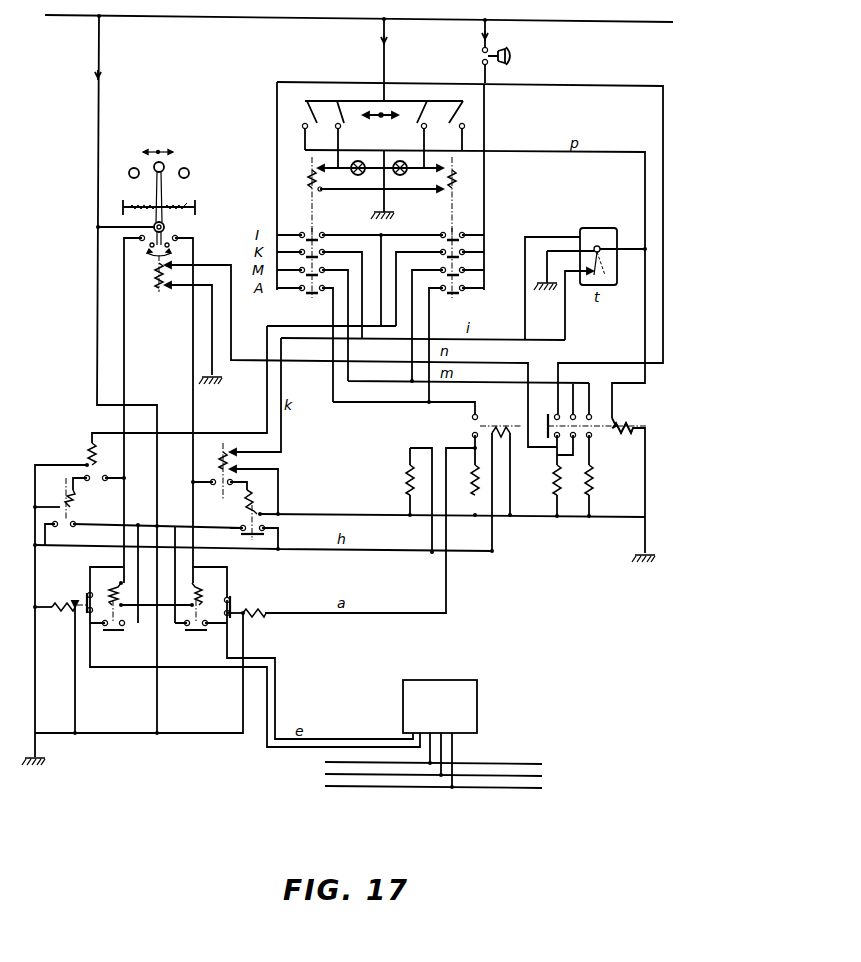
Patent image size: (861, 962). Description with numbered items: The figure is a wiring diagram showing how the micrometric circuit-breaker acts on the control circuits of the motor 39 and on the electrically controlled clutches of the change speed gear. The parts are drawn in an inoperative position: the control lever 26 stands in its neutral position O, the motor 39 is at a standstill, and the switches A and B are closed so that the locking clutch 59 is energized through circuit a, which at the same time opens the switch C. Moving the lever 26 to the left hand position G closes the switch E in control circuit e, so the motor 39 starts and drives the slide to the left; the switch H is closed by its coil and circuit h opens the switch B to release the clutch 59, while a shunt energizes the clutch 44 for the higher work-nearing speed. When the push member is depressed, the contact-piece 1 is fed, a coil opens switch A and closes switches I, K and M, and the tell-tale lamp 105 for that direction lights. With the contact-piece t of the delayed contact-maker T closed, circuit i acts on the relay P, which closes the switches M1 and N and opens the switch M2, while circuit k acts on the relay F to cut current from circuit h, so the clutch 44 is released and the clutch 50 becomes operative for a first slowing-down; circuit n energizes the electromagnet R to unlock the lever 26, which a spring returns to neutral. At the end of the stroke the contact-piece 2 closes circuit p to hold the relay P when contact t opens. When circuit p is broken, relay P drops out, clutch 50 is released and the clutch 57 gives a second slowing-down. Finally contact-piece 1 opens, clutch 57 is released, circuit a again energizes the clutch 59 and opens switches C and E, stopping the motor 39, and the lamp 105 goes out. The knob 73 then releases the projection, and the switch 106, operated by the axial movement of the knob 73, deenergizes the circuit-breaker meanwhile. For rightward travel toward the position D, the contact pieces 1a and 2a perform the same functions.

The control lever 26 is at (163, 203).
The neutral position O is at (158, 149).
The left hand position G is at (144, 192).
The right hand position D is at (172, 192).
The electromagnet R is at (147, 273).
The contact-piece 1 is at (333, 132).
The contact-piece 2 is at (298, 132).
The contact-piece 1a is at (432, 132).
The contact-piece 2a is at (469, 132).
The tell-tale lamp 105 is at (398, 159).
The switch 106 is at (468, 55).
The knob 73 is at (512, 56).
The delayed contact-maker T is at (598, 246).
The switch B is at (465, 425).
The switch N is at (550, 417).
The switch M2 is at (581, 417).
The switch M1 is at (599, 417).
The relay P is at (625, 414).
The clutch 44 is at (395, 480).
The locking clutch 59 is at (464, 480).
The clutch 57 is at (544, 480).
The clutch 50 is at (600, 480).
The relay F is at (221, 490).
The switch H is at (248, 519).
The switch C is at (232, 597).
The switch E is at (196, 614).
The motor 39 is at (440, 706).